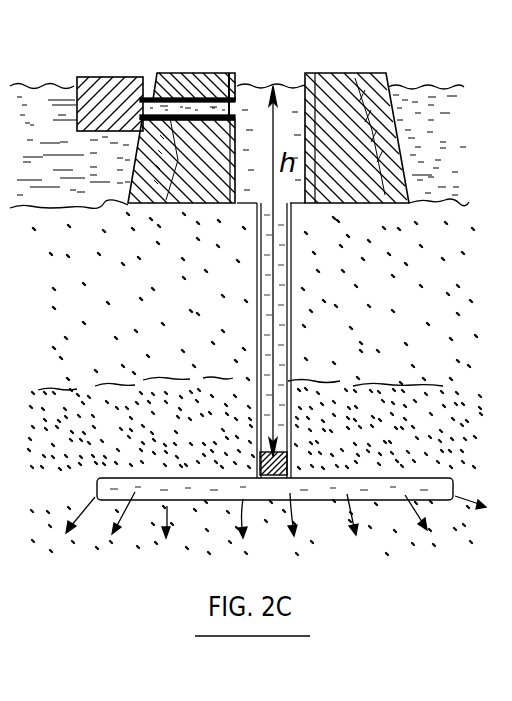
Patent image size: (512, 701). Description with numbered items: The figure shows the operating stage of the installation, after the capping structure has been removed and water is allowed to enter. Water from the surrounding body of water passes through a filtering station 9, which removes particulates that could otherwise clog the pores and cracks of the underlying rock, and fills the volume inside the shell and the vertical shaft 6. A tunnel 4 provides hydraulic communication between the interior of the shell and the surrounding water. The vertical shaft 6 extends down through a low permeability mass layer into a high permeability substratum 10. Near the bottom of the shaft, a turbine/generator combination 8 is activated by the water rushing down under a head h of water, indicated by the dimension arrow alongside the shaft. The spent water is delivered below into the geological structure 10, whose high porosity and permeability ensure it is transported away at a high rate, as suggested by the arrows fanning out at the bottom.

The tunnel 4 is at (200, 108).
The vertical shaft 6 is at (274, 364).
The turbine/generator combination 8 is at (290, 458).
The filtering station 9 is at (110, 78).
The high permeability substratum 10 is at (276, 518).